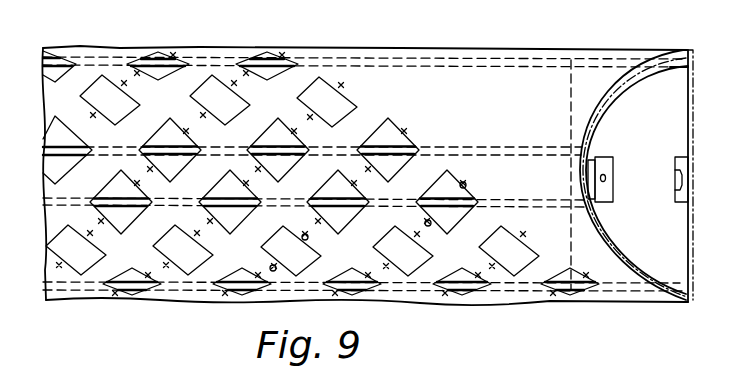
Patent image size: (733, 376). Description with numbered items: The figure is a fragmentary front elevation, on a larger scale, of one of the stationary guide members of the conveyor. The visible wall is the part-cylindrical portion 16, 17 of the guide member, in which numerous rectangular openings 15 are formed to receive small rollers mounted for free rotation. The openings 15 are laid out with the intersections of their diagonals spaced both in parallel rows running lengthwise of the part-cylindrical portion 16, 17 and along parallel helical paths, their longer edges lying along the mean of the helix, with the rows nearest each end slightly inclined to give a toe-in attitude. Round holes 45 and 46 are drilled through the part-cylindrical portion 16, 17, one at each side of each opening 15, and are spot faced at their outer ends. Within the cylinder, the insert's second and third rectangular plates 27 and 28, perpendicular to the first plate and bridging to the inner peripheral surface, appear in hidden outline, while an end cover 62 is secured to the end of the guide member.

The rectangular opening 15 is at (154, 141).
The part-cylindrical portion 16 is at (364, 158).
The part-cylindrical portion 17 is at (485, 78).
The second rectangular plate 27 is at (480, 140).
The third rectangular plate 28 is at (579, 215).
The round hole 45 is at (429, 226).
The round hole 46 is at (308, 237).
The end cover 62 is at (633, 76).